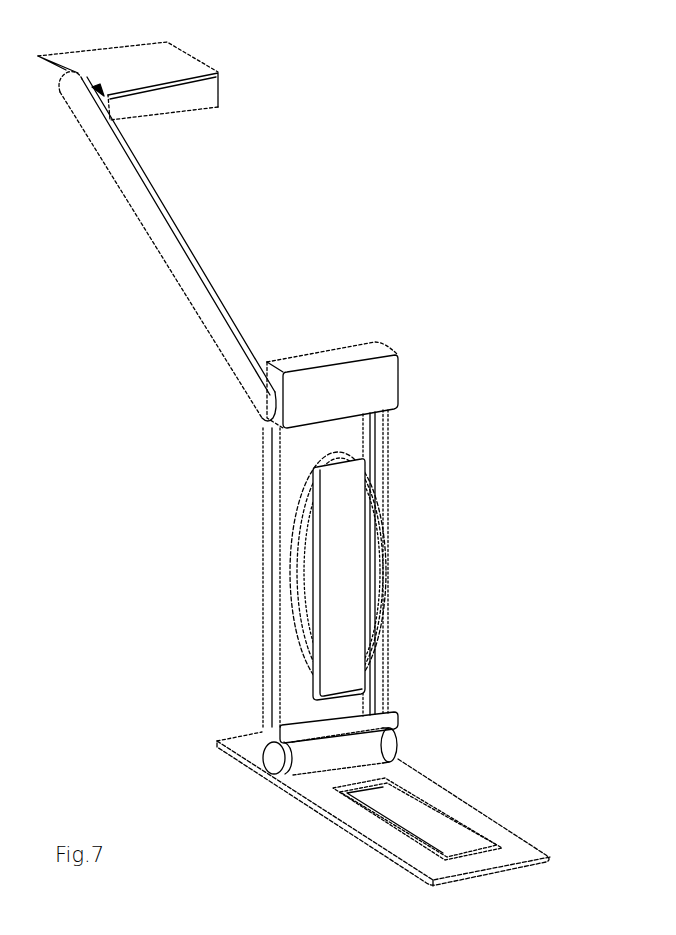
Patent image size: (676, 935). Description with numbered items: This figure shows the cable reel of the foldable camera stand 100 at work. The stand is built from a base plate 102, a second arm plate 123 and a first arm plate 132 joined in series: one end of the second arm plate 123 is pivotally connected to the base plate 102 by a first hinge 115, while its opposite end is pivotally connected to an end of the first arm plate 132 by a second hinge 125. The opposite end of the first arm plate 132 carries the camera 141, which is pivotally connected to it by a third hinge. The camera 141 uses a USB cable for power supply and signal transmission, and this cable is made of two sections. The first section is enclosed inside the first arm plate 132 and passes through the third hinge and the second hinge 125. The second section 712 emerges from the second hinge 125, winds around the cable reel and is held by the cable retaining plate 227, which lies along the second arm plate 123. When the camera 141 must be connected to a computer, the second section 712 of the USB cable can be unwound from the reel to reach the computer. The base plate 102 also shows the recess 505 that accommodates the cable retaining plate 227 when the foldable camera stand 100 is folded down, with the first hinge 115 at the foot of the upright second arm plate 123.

The foldable camera stand 100 is at (418, 155).
The camera 141 is at (173, 62).
The first arm plate 132 is at (160, 242).
The second hinge 125 is at (378, 383).
The second arm plate 123 is at (287, 485).
The second section of the USB cable 712 is at (380, 575).
The cable retaining plate 227 is at (350, 535).
The base plate 102 is at (408, 780).
The recess 505 is at (430, 825).
The first hinge 115 is at (272, 762).